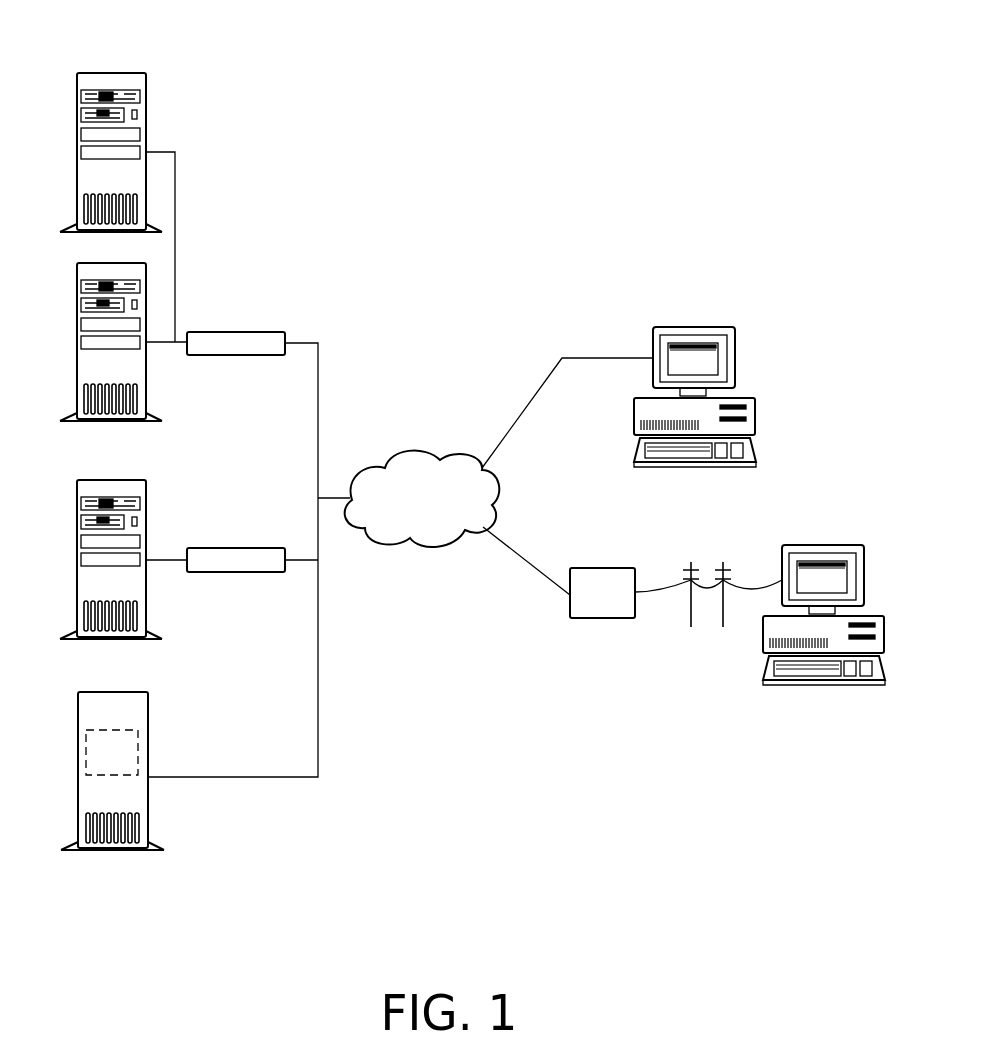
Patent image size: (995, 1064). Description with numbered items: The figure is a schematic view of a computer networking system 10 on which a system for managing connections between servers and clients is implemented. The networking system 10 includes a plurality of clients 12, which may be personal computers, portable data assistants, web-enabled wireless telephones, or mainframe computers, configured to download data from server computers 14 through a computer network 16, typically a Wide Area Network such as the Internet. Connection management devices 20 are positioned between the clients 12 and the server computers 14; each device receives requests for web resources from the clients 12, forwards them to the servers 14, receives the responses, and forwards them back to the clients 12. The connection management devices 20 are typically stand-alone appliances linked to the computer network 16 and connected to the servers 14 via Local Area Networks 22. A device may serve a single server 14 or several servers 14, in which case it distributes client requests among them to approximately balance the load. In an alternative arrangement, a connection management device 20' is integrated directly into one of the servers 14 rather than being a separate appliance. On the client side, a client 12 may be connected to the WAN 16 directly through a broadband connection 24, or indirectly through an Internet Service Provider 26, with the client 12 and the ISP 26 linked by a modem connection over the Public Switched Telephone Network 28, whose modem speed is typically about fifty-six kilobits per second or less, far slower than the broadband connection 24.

The computer networking system 10 is at (740, 195).
The client 12 is at (713, 327).
The server computer 14 is at (112, 73).
The computer network 16 is at (427, 450).
The connection management device 20 is at (256, 425).
The integrated connection management device 20' is at (75, 769).
The local area network 22 is at (176, 260).
The broadband connection 24 is at (533, 390).
The Internet Service Provider 26 is at (600, 619).
The Public Switched Telephone Network 28 is at (708, 590).